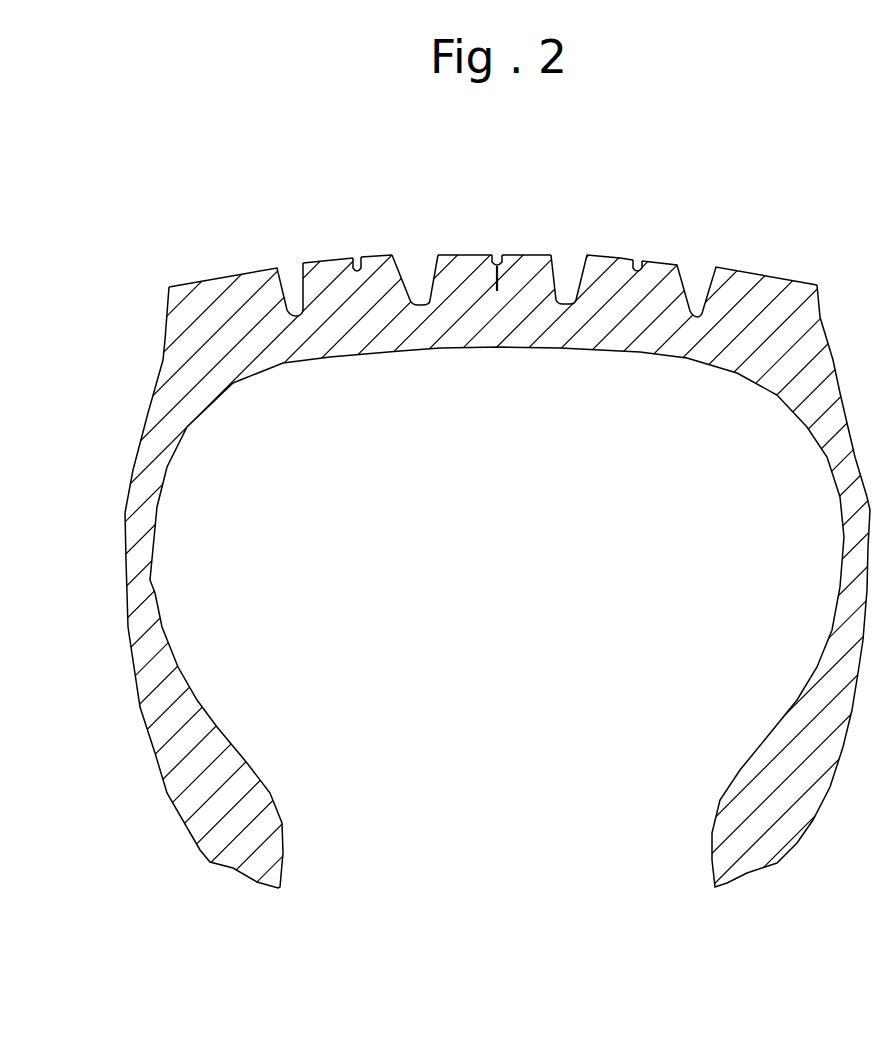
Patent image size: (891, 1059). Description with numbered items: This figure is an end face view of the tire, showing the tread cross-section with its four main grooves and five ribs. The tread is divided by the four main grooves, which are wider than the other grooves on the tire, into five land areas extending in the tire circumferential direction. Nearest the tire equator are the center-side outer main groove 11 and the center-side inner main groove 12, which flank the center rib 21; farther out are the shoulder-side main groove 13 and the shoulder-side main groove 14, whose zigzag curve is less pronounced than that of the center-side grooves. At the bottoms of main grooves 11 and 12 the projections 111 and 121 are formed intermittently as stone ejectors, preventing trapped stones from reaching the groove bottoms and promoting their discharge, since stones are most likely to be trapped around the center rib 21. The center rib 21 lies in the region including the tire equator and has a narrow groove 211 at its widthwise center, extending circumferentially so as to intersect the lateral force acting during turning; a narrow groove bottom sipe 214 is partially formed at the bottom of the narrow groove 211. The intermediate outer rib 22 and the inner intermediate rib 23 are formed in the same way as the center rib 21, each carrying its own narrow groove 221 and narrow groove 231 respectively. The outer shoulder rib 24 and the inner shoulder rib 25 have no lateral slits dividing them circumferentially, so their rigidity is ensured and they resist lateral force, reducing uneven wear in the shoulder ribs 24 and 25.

The center-side outer main groove 11 is at (578, 292).
The projection 111 is at (569, 298).
The center-side inner main groove 12 is at (407, 270).
The projection 121 is at (420, 297).
The shoulder-side main groove 13 is at (705, 278).
The shoulder-side main groove 14 is at (290, 286).
The center rib 21 is at (470, 253).
The narrow groove 211 is at (497, 255).
The narrow groove bottom sipe 214 is at (498, 288).
The intermediate outer rib 22 is at (665, 265).
The narrow groove 221 is at (637, 262).
The inner intermediate rib 23 is at (332, 258).
The narrow groove 231 is at (357, 255).
The outer shoulder rib 24 is at (780, 278).
The inner shoulder rib 25 is at (223, 277).